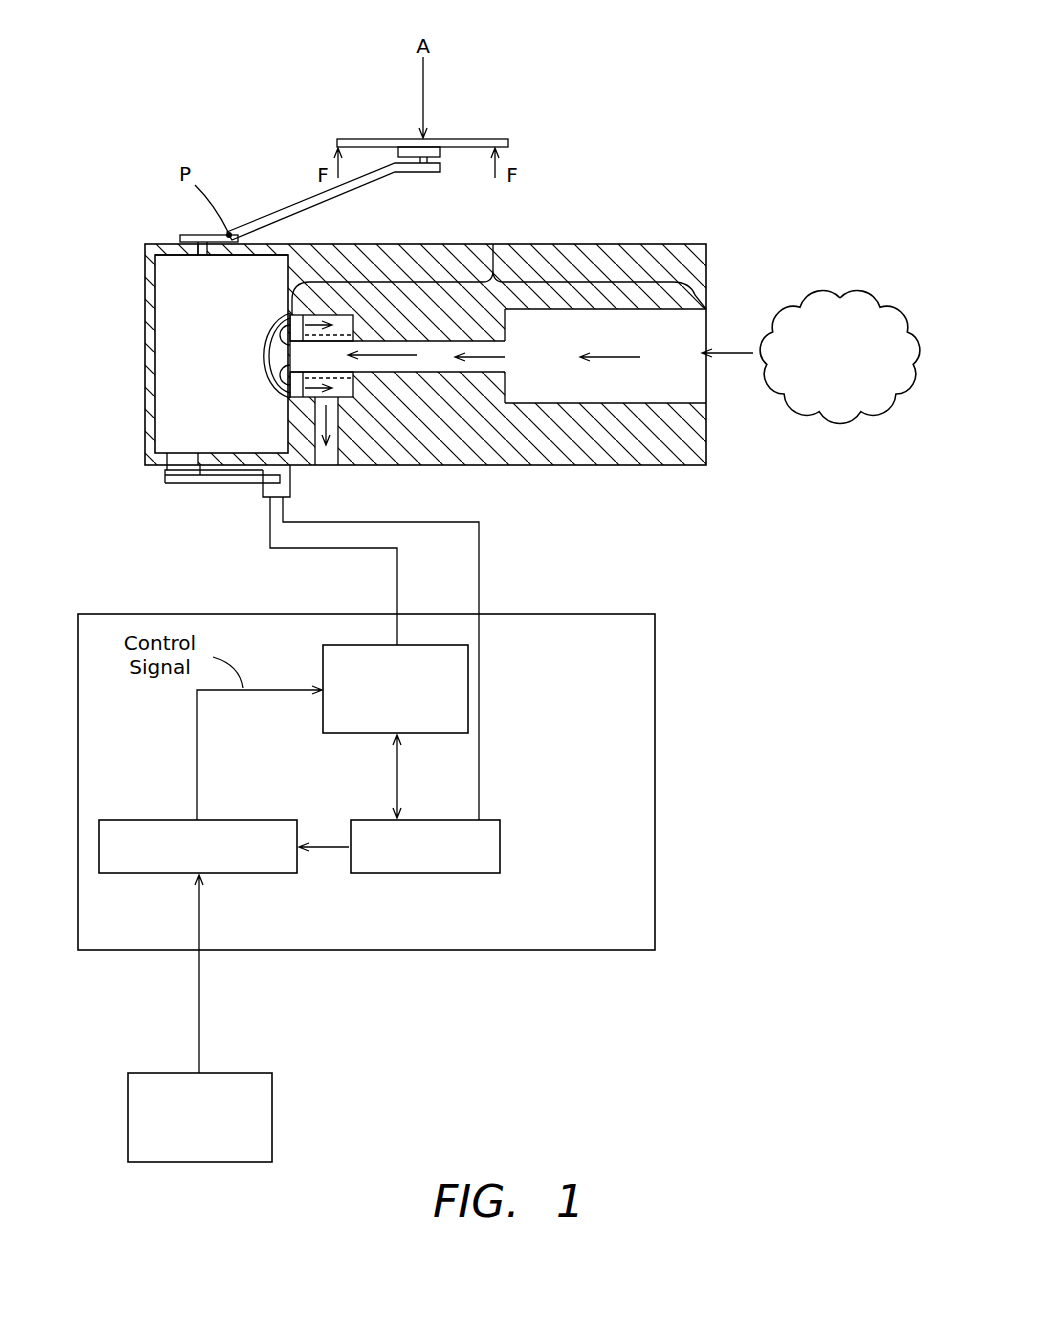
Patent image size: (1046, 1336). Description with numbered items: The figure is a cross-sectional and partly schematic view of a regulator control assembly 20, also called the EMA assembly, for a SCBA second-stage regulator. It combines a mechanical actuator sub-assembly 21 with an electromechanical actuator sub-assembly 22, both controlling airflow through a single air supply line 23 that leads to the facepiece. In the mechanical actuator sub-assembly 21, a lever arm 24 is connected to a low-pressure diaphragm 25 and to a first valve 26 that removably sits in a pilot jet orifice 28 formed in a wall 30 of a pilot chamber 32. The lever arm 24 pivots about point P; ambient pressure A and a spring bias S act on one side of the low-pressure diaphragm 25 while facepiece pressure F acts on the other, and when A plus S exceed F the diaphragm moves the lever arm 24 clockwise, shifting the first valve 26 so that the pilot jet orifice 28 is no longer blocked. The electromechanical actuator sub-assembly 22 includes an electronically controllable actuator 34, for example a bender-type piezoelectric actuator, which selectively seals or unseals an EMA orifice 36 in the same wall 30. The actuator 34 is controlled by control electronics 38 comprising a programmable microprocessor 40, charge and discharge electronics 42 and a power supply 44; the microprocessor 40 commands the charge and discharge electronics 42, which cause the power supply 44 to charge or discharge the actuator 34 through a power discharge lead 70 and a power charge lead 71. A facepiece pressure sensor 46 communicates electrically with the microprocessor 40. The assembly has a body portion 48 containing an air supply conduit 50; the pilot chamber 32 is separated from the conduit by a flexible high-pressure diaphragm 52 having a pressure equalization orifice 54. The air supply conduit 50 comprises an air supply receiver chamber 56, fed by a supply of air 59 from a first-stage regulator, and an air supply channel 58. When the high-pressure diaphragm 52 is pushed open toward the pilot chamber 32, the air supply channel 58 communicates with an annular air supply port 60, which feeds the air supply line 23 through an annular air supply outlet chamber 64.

The regulator control assembly 20 is at (614, 56).
The mechanical actuator sub-assembly 21 is at (247, 141).
The electromechanical actuator sub-assembly 22 is at (155, 581).
The air supply line 23 is at (328, 467).
The lever arm 24 is at (308, 196).
The low-pressure diaphragm 25 is at (492, 137).
The first valve 26 is at (183, 236).
The pilot jet orifice 28 is at (178, 256).
The wall 30 is at (181, 258).
The pilot chamber 32 is at (234, 440).
The electronically controllable actuator 34 is at (223, 491).
The EMA orifice 36 is at (183, 453).
The control electronics 38 is at (665, 604).
The programmable microprocessor 40 is at (170, 820).
The charge and discharge electronics 42 is at (323, 660).
The power supply 44 is at (500, 820).
The facepiece pressure sensor 46 is at (272, 1073).
The body portion 48 is at (602, 255).
The air supply conduit 50 is at (498, 249).
The flexible high-pressure diaphragm 52 is at (263, 360).
The pressure equalization orifice 54 is at (263, 356).
The air supply receiver chamber 56 is at (693, 324).
The air supply channel 58 is at (449, 369).
The supply of air 59 is at (838, 416).
The annular air supply port 60 is at (294, 312).
The annular air supply outlet chamber 64 is at (353, 392).
The power discharge lead 70 is at (479, 522).
The power charge lead 71 is at (397, 582).